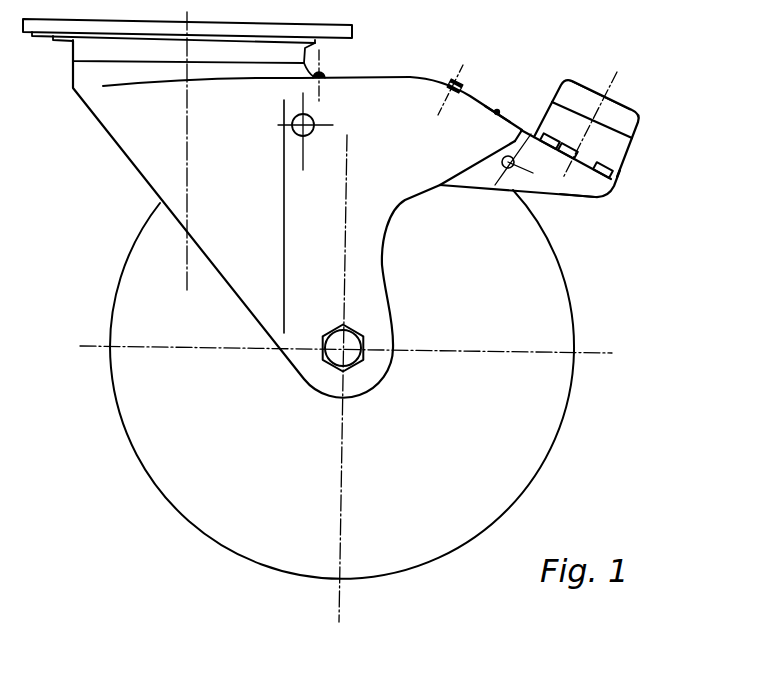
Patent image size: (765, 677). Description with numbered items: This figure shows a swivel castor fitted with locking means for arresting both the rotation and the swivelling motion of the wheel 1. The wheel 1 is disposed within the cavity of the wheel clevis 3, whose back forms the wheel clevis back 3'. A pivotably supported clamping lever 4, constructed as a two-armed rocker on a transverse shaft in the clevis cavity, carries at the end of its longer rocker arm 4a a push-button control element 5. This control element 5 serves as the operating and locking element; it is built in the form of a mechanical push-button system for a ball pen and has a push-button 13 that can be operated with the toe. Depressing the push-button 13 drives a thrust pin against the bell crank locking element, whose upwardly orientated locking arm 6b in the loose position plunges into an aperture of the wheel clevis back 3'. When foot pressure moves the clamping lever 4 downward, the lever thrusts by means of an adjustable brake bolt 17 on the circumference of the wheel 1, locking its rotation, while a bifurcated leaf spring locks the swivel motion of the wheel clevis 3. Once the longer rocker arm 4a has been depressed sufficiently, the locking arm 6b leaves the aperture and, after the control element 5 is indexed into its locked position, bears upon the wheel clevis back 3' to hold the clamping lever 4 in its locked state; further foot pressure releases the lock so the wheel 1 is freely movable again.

The wheel 1 is at (550, 302).
The wheel clevis 3 is at (231, 205).
The wheel clevis back 3' is at (466, 77).
The clamping lever 4 is at (477, 180).
The rocker arm 4a is at (575, 185).
The push-button control element 5 is at (612, 147).
The locking arm 6b is at (497, 112).
The push-button 13 is at (622, 115).
The brake bolt 17 is at (458, 86).